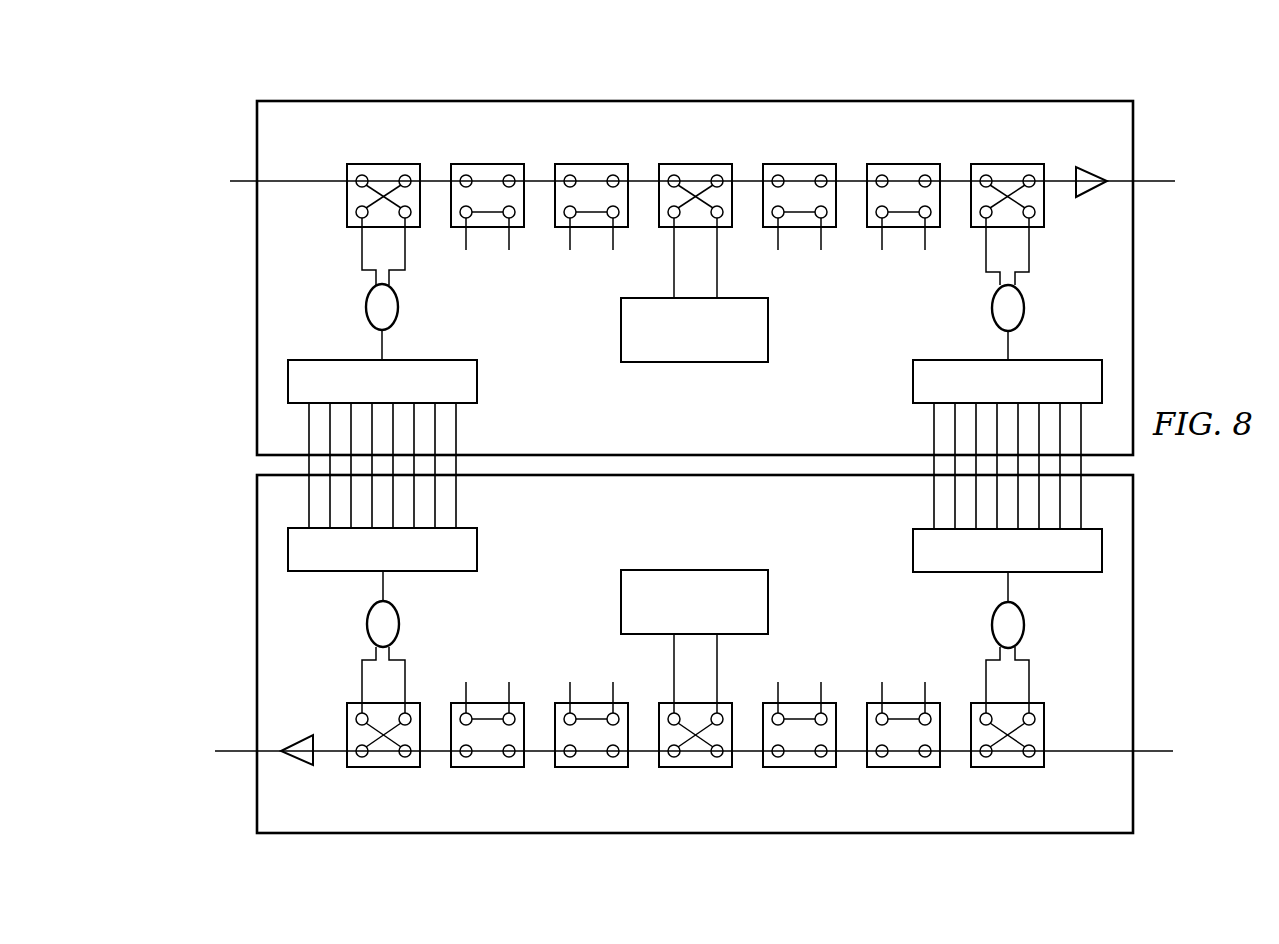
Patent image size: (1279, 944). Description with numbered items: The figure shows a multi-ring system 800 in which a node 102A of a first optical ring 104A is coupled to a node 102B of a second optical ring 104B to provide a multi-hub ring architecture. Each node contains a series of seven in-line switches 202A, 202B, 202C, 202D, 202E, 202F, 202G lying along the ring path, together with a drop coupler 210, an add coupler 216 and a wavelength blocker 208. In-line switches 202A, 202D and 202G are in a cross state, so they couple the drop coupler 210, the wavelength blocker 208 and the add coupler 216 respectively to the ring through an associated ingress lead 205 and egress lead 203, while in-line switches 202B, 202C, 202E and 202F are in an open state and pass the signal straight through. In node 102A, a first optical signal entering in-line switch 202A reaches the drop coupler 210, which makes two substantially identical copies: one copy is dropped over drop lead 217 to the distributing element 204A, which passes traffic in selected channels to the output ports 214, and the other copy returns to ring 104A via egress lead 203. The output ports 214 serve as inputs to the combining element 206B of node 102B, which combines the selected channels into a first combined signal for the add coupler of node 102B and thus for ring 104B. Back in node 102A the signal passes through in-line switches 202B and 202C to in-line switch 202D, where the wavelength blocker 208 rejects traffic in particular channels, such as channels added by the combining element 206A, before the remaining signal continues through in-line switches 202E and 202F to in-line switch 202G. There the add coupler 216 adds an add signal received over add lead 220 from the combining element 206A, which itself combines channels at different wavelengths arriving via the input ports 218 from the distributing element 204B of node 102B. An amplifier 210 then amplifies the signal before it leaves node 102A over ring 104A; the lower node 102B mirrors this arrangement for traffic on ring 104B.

The multi-ring system 800 is at (512, 66).
The node 102A is at (250, 372).
The node 102B is at (250, 784).
The ring 104A is at (1162, 181).
The ring 104B is at (1155, 753).
The in-line switch 202A is at (385, 164).
The in-line switch 202B is at (489, 164).
The in-line switch 202C is at (593, 164).
The in-line switch 202D is at (697, 164).
The in-line switch 202E is at (808, 164).
The in-line switch 202F is at (918, 164).
The in-line switch 202G is at (1018, 164).
The egress lead 203 is at (362, 253).
The ingress lead 205 is at (405, 253).
The wavelength blocker 208 is at (621, 330).
The drop coupler 210 is at (398, 305).
The output ports 214 is at (456, 413).
The add coupler 216 is at (1024, 306).
The drop lead 217 is at (382, 351).
The input ports 218 is at (934, 413).
The add lead 220 is at (1008, 352).
The distributing element 204A is at (357, 393).
The distributing element 204B is at (983, 562).
The combining element 206A is at (983, 393).
The combining element 206B is at (357, 561).